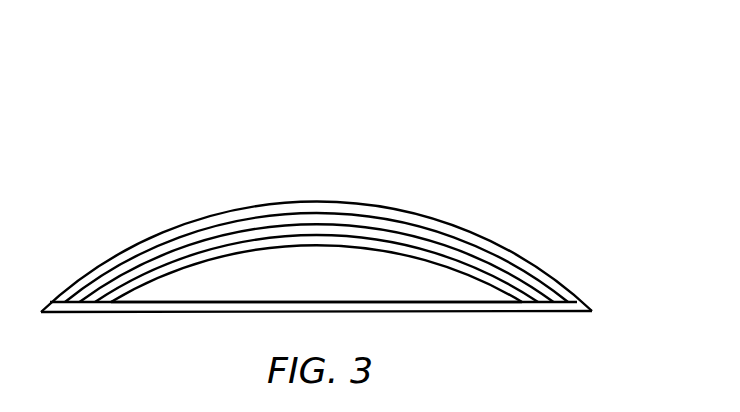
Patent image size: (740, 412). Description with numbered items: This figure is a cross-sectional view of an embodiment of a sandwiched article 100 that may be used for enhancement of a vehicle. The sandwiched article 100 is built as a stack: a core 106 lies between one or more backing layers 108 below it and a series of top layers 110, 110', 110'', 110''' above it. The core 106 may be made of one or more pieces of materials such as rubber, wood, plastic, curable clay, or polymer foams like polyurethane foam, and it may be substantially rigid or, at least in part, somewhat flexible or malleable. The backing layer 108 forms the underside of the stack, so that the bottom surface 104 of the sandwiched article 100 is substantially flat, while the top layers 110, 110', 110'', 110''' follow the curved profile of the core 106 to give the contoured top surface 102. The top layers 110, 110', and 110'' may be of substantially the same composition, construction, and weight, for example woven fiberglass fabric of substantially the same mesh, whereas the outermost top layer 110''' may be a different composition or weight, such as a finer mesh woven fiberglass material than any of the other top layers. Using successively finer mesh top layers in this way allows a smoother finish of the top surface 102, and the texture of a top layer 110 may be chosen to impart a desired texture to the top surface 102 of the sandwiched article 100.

The sandwiched article 100 is at (462, 75).
The top surface 102 is at (260, 203).
The bottom surface 104 is at (188, 313).
The core 106 is at (337, 293).
The backing layer 108 is at (512, 304).
The top layer 110 is at (316, 273).
The top layer 110' is at (344, 263).
The top layer 110'' is at (317, 247).
The top layer 110''' is at (316, 230).